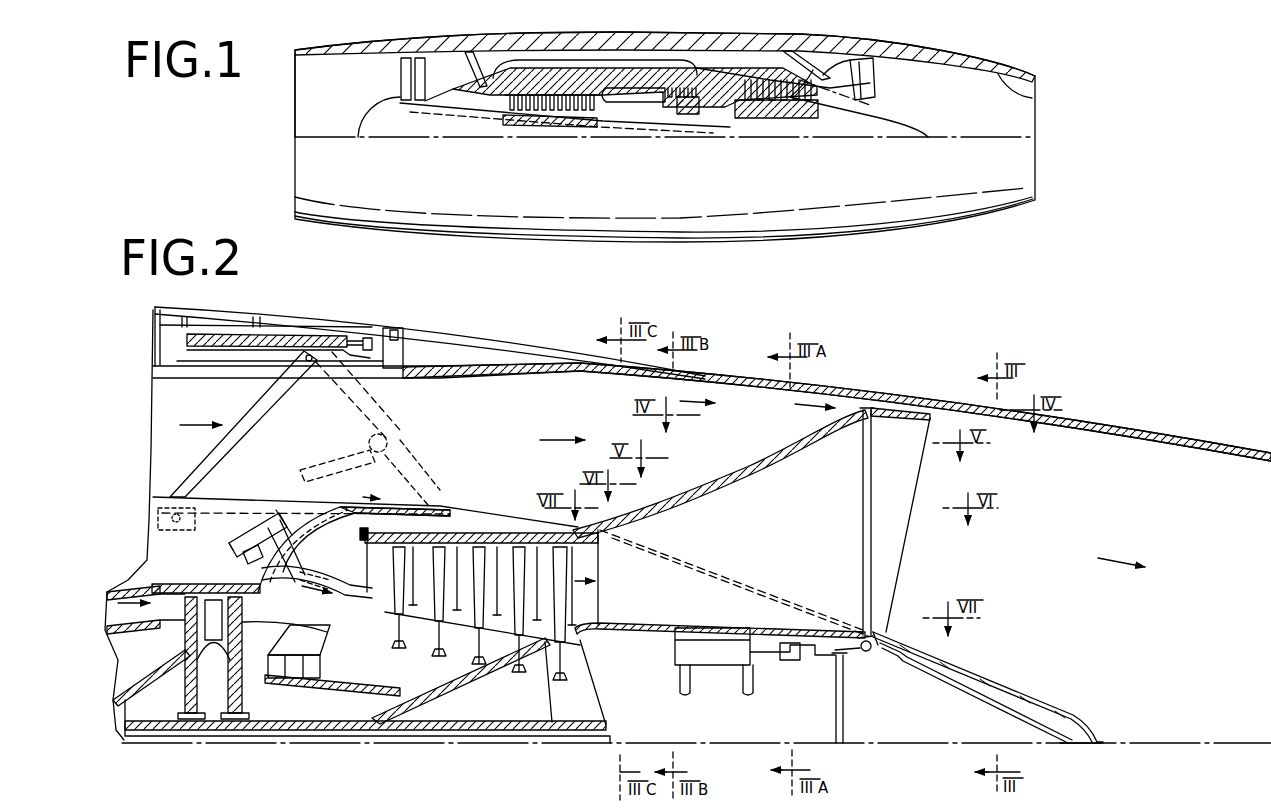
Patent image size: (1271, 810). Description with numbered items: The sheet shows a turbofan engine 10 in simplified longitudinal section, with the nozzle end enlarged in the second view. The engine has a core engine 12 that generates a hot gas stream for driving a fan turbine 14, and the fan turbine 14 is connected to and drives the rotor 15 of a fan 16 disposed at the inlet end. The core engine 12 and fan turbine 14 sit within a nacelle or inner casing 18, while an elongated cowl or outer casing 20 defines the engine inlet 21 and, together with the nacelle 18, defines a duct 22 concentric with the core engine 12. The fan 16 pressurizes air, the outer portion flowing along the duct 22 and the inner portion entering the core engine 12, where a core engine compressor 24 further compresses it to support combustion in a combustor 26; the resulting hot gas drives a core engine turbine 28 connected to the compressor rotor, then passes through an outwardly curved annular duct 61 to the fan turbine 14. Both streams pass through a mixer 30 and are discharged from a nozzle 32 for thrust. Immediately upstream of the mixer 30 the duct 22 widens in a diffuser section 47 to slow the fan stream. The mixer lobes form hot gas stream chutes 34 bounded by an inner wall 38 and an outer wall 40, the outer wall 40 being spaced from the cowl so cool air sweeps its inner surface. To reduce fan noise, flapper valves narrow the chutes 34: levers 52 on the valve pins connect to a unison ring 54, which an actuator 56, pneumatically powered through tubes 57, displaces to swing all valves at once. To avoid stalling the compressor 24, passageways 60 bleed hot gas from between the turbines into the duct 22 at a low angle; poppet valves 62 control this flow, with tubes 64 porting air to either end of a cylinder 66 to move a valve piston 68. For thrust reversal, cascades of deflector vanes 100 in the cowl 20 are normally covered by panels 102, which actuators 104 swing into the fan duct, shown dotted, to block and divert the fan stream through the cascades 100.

In FIG. 1, the turbofan engine 10 is at (285, 172).
In FIG. 1, the core engine 12 is at (616, 60).
In FIG. 1, the fan turbine 14 is at (786, 120).
In FIG. 2, the fan turbine 14 is at (457, 537).
In FIG. 1, the rotor 15 is at (400, 108).
In FIG. 1, the fan 16 is at (392, 75).
In FIG. 1, the nacelle or inner casing 18 is at (705, 68).
In FIG. 2, the nacelle or inner casing 18 is at (250, 477).
In FIG. 1, the cowl or outer casing 20 is at (610, 42).
In FIG. 1, the engine inlet 21 is at (310, 99).
In FIG. 1, the duct 22 is at (526, 48).
In FIG. 2, the duct 22 is at (305, 433).
In FIG. 1, the core engine compressor 24 is at (498, 107).
In FIG. 1, the combustor 26 is at (620, 102).
In FIG. 1, the core engine turbine 28 is at (704, 104).
In FIG. 2, the core engine turbine 28 is at (183, 629).
In FIG. 1, the mixer 30 is at (880, 72).
In FIG. 2, the mixer 30 is at (950, 556).
In FIG. 1, the nozzle 32 is at (1034, 98).
In FIG. 2, the hot gas stream chutes 34 is at (764, 538).
In FIG. 2, the inner wall 38 is at (702, 620).
In FIG. 2, the outer wall 40 is at (782, 448).
In FIG. 1, the diffuser section 47 is at (813, 68).
In FIG. 2, the levers 52 is at (862, 652).
In FIG. 2, the unison ring 54 is at (843, 710).
In FIG. 2, the actuator 56 is at (718, 660).
In FIG. 2, the tubes 57 is at (680, 687).
In FIG. 2, the passageways 60 is at (357, 507).
In FIG. 2, the outwardly curved annular duct 61 is at (323, 612).
In FIG. 2, the poppet valves 62 is at (243, 523).
In FIG. 2, the tubes 64 is at (243, 553).
In FIG. 2, the cylinder 66 is at (272, 518).
In FIG. 2, the valve piston 68 is at (316, 518).
In FIG. 2, the cascades of deflector vanes 100 is at (310, 338).
In FIG. 2, the panels 102 is at (230, 366).
In FIG. 2, the actuators 104 is at (185, 312).